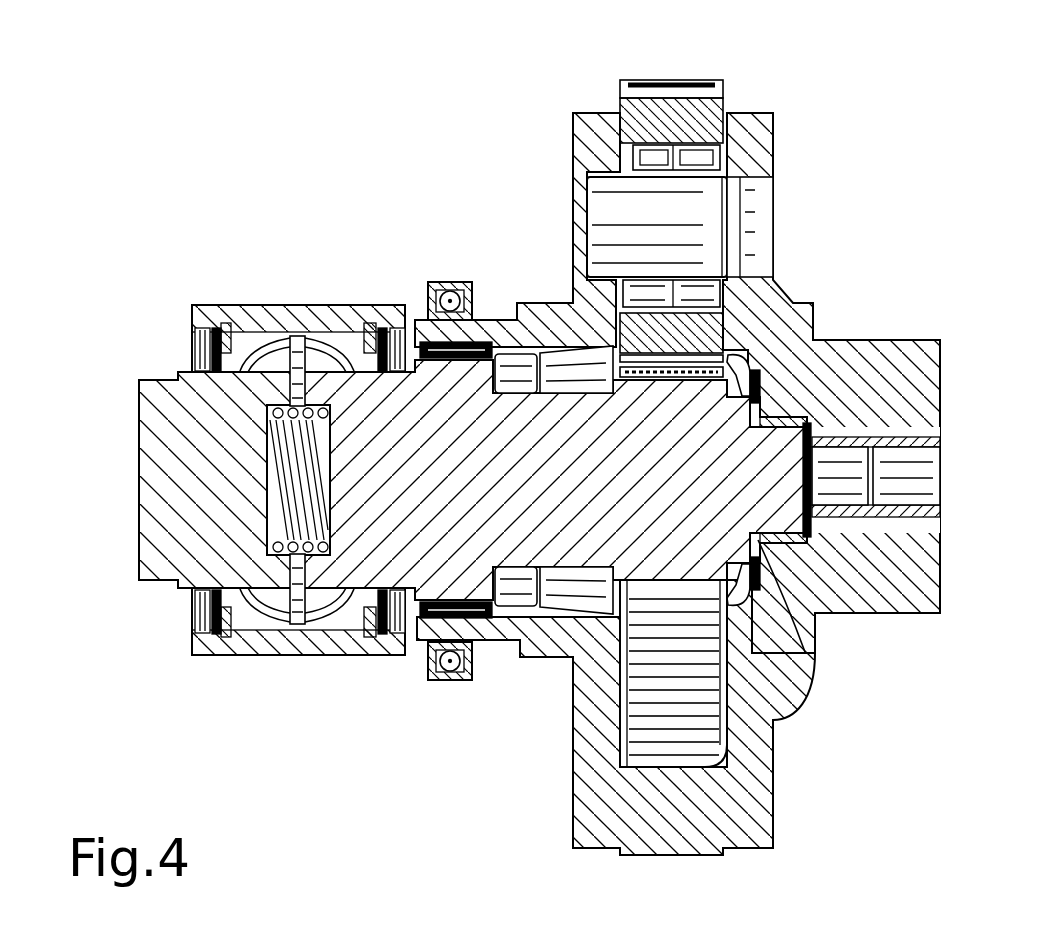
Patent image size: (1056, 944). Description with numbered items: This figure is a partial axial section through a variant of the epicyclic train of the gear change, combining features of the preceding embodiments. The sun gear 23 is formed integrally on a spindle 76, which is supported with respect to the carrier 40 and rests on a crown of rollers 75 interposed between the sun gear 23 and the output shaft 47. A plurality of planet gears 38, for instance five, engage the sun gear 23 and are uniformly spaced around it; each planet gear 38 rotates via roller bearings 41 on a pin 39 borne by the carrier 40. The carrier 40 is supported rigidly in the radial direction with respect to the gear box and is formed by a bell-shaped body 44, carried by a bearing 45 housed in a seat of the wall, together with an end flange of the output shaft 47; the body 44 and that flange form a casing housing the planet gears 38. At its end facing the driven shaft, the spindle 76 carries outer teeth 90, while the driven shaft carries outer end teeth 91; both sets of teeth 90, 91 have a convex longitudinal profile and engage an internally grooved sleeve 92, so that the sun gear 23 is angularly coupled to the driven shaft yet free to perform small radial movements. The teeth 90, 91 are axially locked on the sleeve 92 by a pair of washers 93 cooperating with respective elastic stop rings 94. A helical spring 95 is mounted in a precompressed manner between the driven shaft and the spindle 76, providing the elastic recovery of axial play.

The sun gear 23 is at (723, 398).
The planet gears 38 is at (694, 100).
The pins 39 is at (720, 222).
The carrier 40 is at (773, 852).
The roller bearings 41 is at (652, 165).
The bell-shaped body 44 is at (543, 333).
The bearing 45 is at (450, 283).
The output shaft 47 is at (917, 403).
The crown of rollers 75 is at (805, 652).
The spindle 76 is at (566, 576).
The outer teeth 90 is at (330, 340).
The outer end teeth 91 is at (253, 340).
The internally grooved sleeve 92 is at (289, 345).
The washers 93 is at (237, 663).
The elastic stop rings 94 is at (212, 663).
The helical spring 95 is at (263, 443).